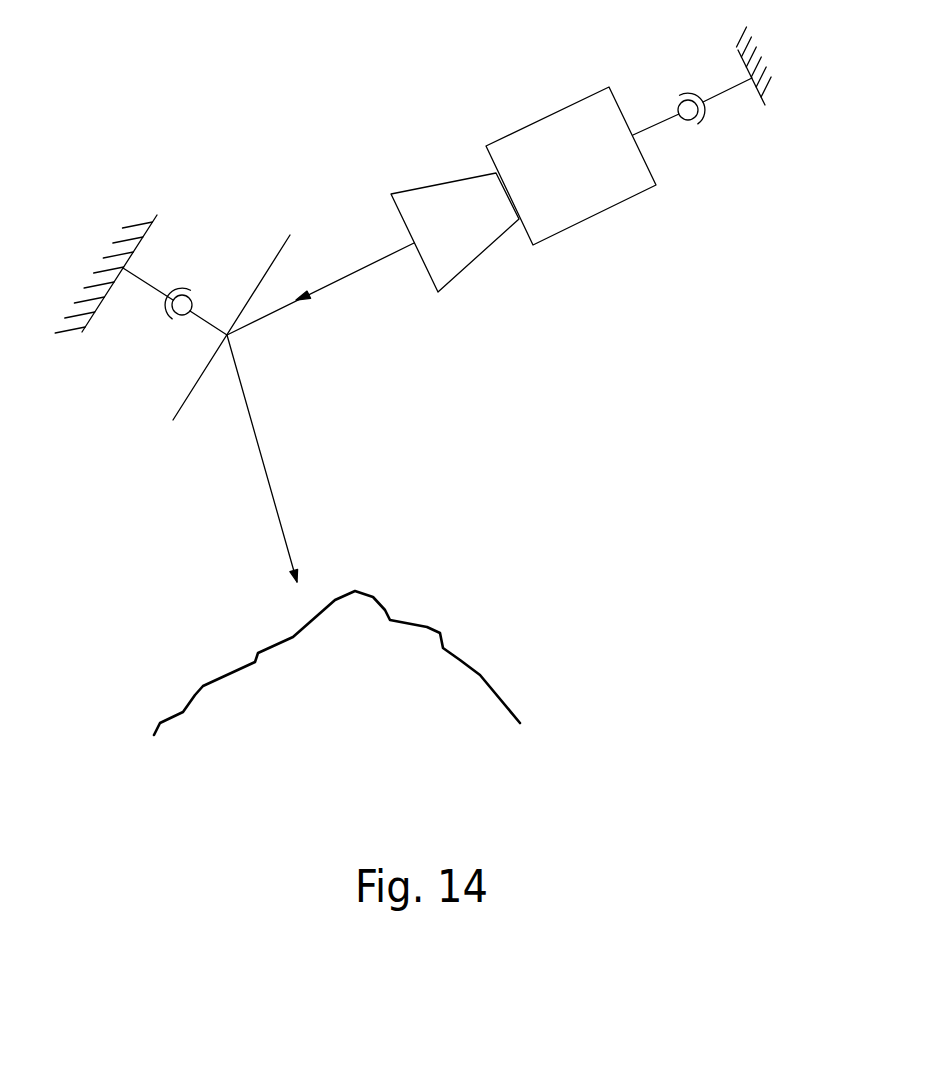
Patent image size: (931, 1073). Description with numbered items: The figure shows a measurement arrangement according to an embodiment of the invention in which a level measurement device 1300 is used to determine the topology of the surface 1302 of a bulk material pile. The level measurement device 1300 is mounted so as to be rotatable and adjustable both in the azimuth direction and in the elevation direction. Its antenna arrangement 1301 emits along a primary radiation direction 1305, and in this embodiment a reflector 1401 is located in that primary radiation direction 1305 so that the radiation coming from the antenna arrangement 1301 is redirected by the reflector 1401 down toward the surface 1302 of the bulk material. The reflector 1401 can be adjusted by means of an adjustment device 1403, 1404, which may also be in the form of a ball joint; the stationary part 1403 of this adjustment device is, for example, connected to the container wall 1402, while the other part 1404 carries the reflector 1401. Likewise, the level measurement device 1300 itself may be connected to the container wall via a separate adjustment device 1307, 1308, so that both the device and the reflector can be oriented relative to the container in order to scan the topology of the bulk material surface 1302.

The level measurement device 1300 is at (557, 125).
The antenna arrangement 1301 is at (463, 253).
The surface 1302 is at (468, 687).
The primary radiation direction 1305 is at (357, 273).
The adjustment device 1307 is at (680, 120).
The adjustment device 1308 is at (707, 117).
The reflector 1401 is at (188, 405).
The container wall 1402 is at (133, 220).
The stationary part of the adjustment device 1403 is at (178, 288).
The adjustment device 1404 is at (183, 322).